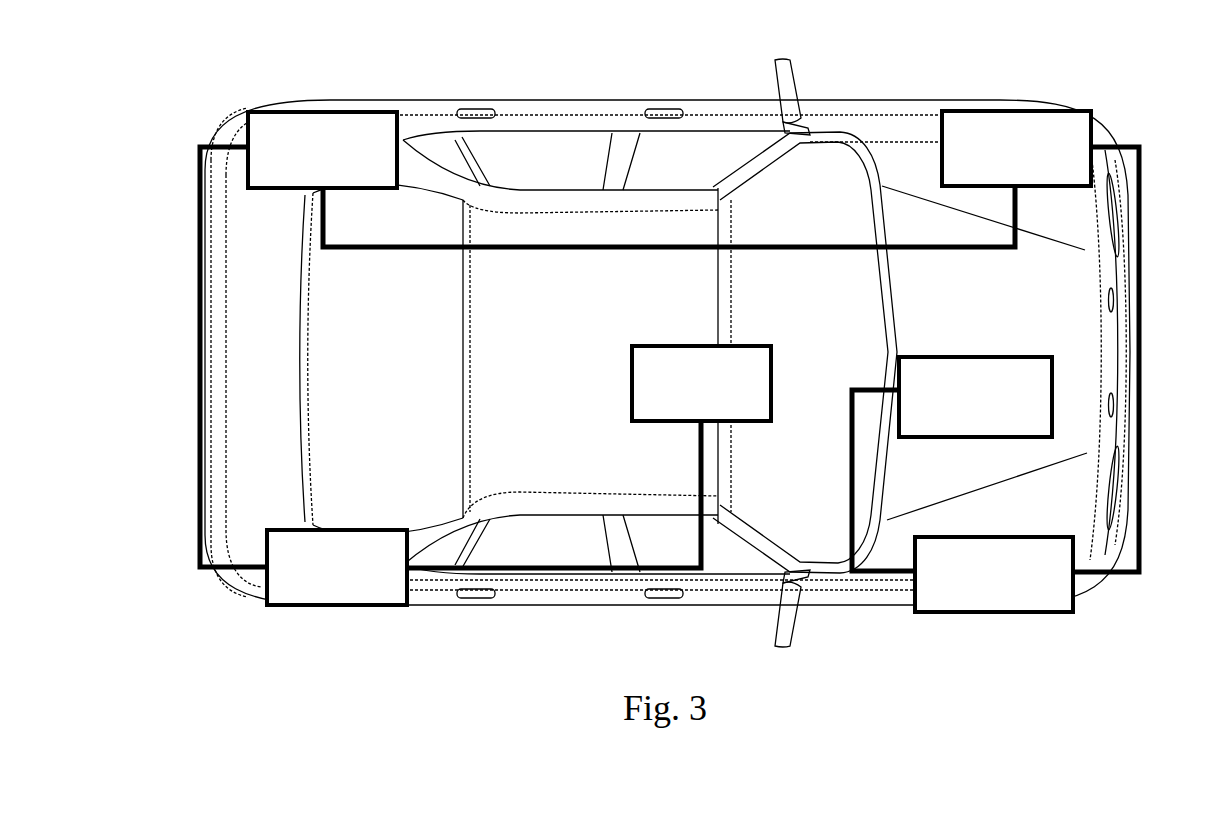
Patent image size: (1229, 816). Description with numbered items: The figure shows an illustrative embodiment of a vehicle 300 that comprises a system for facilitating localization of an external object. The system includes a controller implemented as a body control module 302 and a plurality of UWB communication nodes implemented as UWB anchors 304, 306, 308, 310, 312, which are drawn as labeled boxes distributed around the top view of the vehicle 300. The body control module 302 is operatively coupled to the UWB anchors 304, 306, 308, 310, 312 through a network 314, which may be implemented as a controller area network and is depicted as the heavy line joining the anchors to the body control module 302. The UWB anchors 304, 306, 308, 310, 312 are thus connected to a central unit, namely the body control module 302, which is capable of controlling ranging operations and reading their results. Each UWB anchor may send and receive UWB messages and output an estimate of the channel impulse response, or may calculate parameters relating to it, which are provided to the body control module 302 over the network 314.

The vehicle 300 is at (568, 100).
The body control module (BCM) 302 is at (968, 413).
The UWB anchor 304 is at (986, 590).
The UWB anchor 306 is at (1006, 164).
The UWB anchor 308 is at (313, 165).
The UWB anchor 310 is at (328, 583).
The UWB anchor 312 is at (691, 399).
The network 314 is at (200, 335).